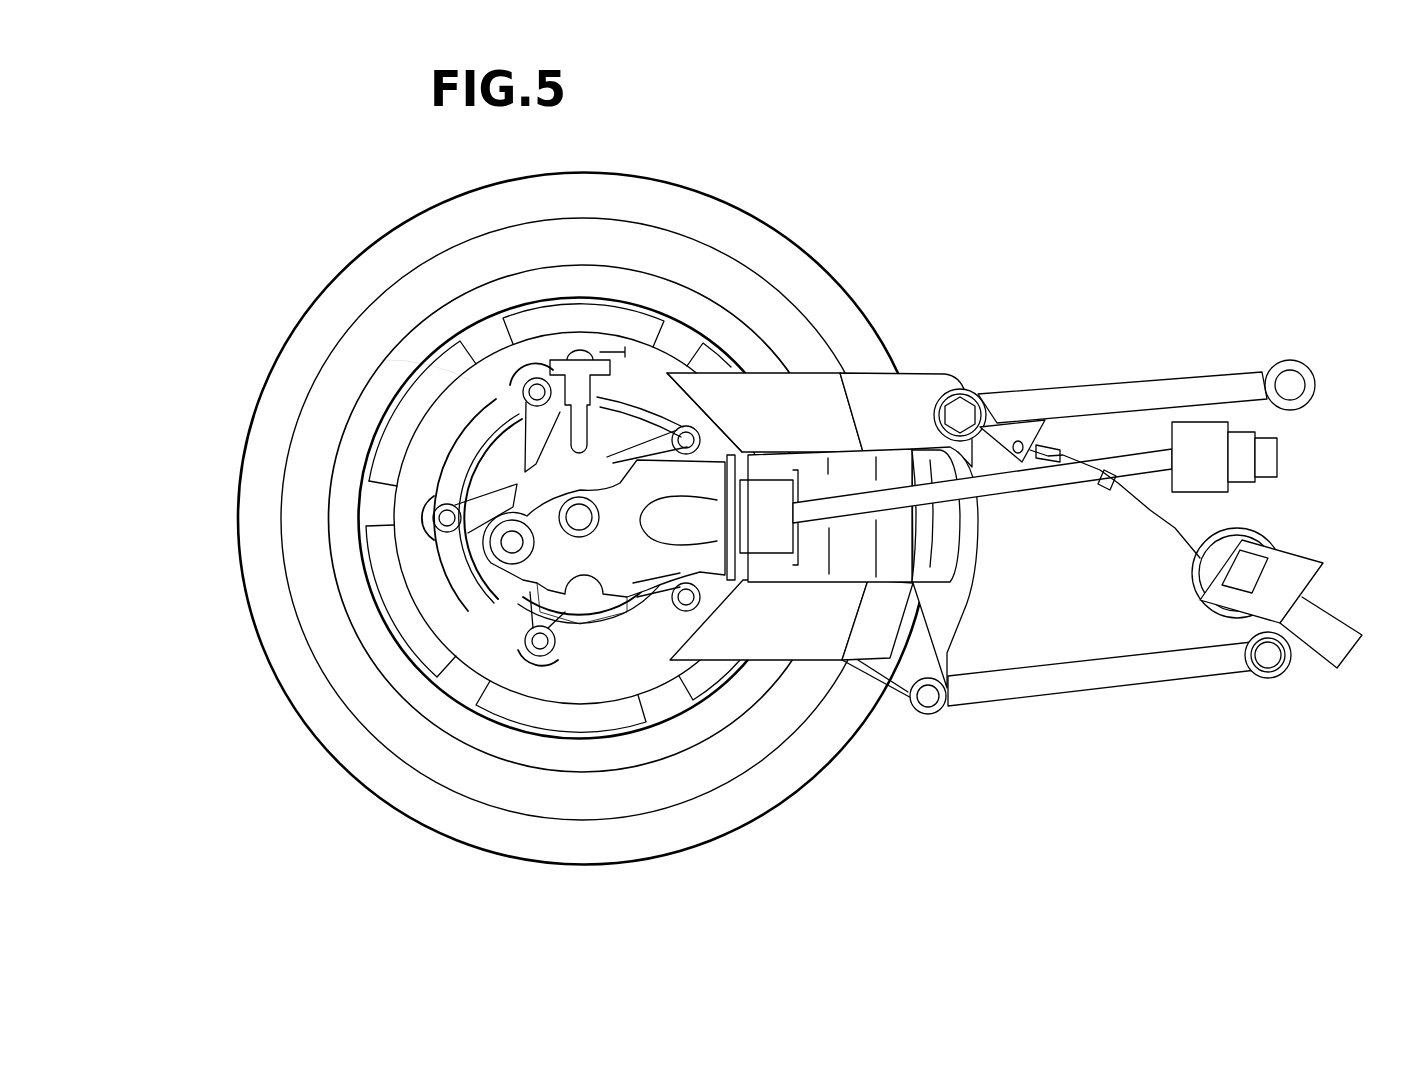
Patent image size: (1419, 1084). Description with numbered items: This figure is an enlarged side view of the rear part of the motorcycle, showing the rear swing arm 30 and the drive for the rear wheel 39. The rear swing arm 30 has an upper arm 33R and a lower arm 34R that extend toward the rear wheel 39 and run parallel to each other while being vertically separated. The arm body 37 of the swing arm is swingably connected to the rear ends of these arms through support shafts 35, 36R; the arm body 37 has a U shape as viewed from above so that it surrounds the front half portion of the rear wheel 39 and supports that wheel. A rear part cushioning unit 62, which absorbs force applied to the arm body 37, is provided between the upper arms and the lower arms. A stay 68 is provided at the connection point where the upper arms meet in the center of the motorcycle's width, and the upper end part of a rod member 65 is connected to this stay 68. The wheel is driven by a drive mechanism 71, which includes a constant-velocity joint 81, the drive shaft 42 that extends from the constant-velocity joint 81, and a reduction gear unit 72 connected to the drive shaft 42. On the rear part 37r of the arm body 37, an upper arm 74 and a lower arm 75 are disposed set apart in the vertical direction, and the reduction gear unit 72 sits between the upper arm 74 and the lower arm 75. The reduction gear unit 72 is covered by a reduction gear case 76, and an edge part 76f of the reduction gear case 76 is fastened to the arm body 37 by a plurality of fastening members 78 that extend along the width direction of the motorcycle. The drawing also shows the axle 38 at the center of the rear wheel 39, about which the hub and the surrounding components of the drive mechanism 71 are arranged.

The rear swing arm 30 is at (1075, 355).
The upper arm 33R is at (1132, 397).
The lower arm 34R is at (1142, 673).
The support shaft 35 is at (961, 392).
The support shaft 36R is at (928, 715).
The arm body 37 is at (866, 365).
The rear part of the arm body 37r is at (683, 425).
The axle 38 is at (579, 522).
The rear wheel 39 is at (662, 835).
The drive shaft 42 is at (1027, 483).
The rear part cushioning unit 62 is at (1267, 540).
The rod member 65 is at (1113, 500).
The stay 68 is at (1022, 443).
The drive mechanism 71 is at (648, 645).
The reduction gear unit 72 is at (508, 588).
The upper arm 74 is at (641, 393).
The lower arm 75 is at (620, 647).
The reduction gear case 76 is at (547, 584).
The edge part of the reduction gear case 76f is at (475, 435).
The fastening member 78 is at (524, 380).
The constant-velocity joint 81 is at (1197, 437).